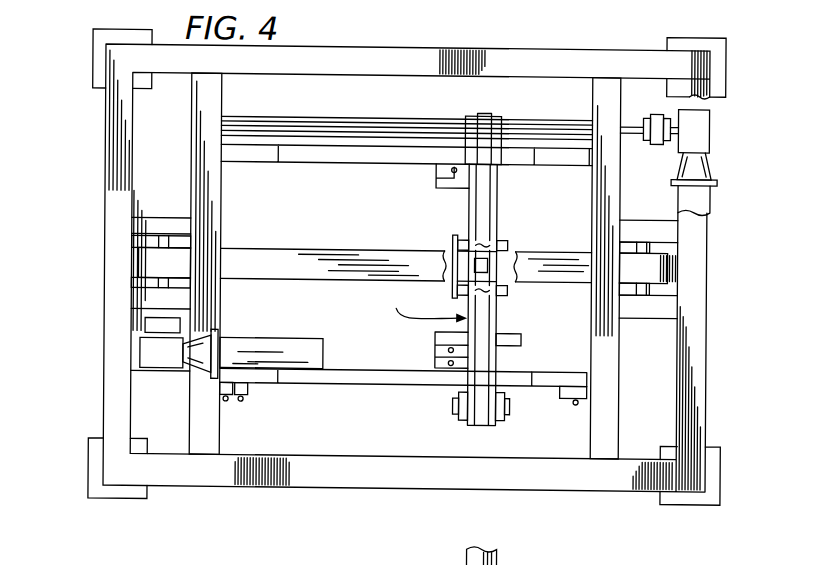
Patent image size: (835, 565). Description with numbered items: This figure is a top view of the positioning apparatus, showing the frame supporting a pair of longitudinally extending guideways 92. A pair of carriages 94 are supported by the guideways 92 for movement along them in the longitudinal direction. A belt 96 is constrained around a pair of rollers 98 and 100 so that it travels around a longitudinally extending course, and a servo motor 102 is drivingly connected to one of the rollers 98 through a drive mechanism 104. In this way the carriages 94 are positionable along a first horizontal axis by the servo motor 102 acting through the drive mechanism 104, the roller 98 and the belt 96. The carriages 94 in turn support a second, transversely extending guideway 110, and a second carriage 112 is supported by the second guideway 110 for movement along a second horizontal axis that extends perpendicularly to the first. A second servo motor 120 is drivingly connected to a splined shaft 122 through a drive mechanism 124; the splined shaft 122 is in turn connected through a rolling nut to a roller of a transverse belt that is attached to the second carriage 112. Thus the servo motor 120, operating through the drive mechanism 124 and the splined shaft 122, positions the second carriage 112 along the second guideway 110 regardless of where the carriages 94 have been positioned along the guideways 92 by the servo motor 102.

The guideways 92 is at (375, 382).
The carriages 94 is at (470, 205).
The belt 96 is at (316, 249).
The roller 98 is at (150, 246).
The roller 100 is at (668, 245).
The servo motor 102 is at (306, 338).
The drive mechanism 104 is at (144, 344).
The second guideway 110 is at (416, 308).
The second carriage 112 is at (516, 235).
The servo motor 120 is at (707, 197).
The splined shaft 122 is at (527, 115).
The drive mechanism 124 is at (706, 124).